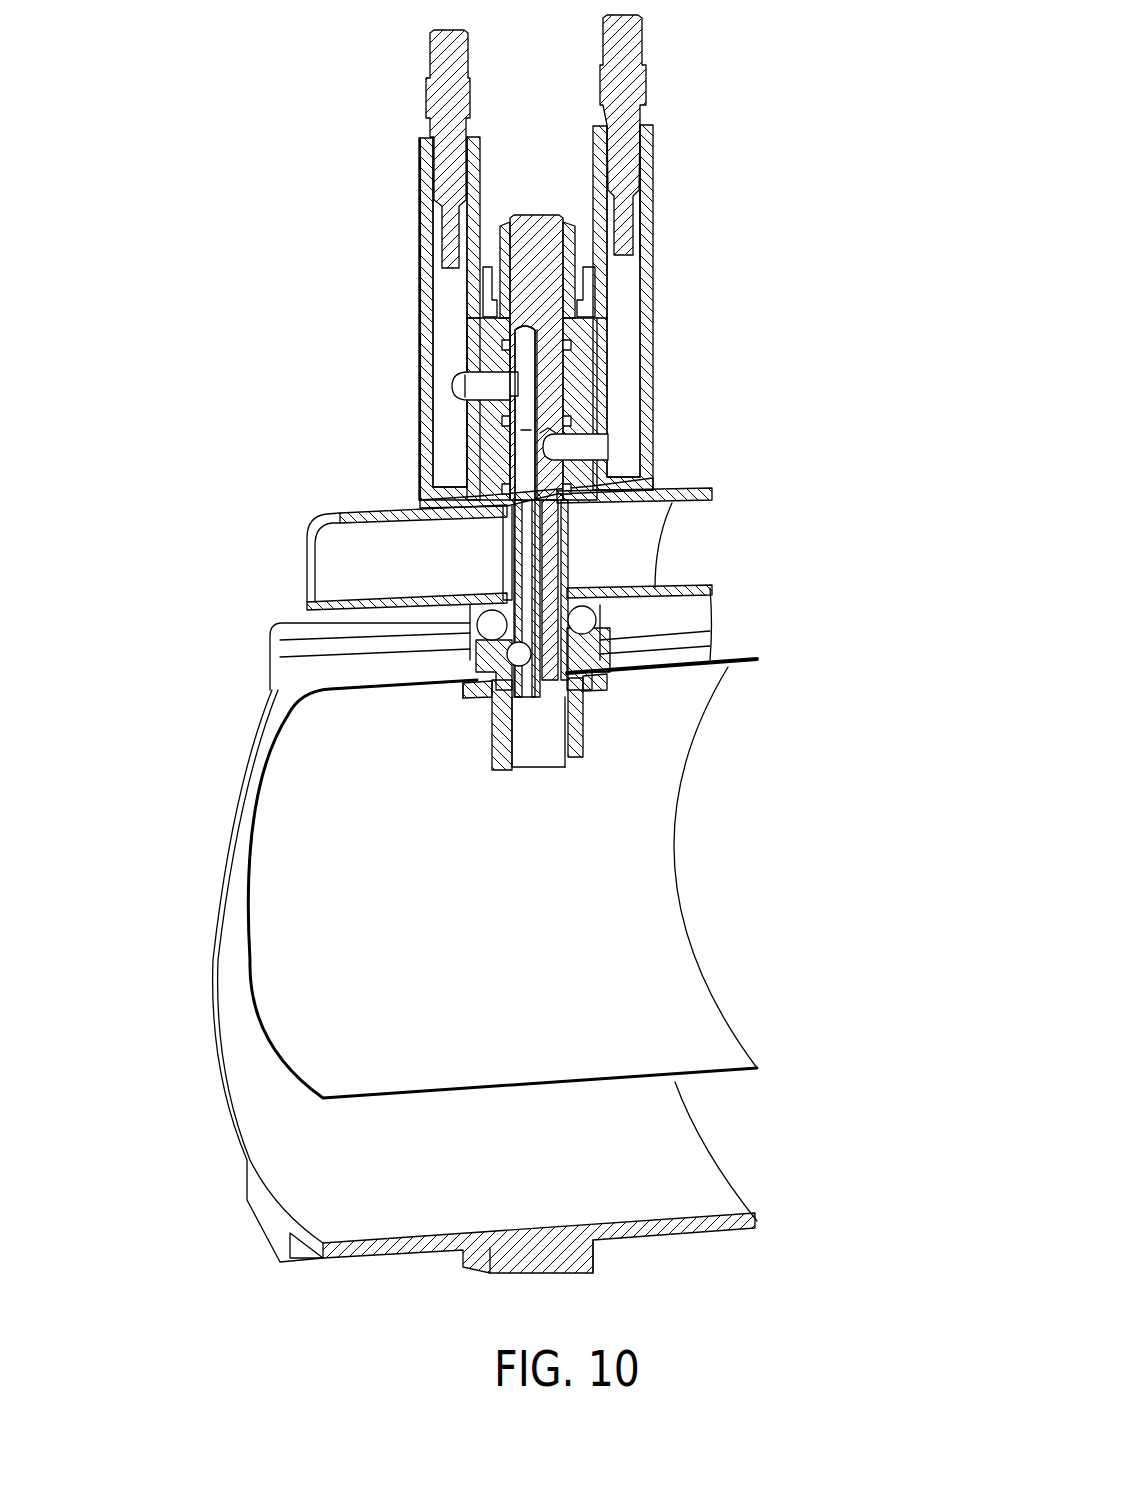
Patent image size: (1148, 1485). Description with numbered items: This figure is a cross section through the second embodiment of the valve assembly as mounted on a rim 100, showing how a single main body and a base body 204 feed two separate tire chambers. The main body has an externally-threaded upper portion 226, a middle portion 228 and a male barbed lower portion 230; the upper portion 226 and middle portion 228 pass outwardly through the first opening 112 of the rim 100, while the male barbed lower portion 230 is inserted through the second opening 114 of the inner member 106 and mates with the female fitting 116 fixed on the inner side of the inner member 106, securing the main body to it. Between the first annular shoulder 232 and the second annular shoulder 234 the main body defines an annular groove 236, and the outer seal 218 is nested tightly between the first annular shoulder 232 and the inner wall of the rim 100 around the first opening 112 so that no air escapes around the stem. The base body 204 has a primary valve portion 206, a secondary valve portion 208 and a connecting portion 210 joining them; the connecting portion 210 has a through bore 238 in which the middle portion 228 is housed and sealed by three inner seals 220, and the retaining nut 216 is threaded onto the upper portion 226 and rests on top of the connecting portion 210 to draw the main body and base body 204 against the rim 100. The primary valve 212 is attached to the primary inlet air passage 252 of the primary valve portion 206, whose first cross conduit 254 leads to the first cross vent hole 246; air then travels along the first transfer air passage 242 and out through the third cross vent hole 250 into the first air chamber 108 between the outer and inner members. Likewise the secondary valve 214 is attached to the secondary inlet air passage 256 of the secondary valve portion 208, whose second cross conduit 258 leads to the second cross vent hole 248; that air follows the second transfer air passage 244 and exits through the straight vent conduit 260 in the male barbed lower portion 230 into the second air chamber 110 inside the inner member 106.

The rim 100 is at (711, 484).
The inner member 106 is at (742, 1074).
The first air chamber 108 is at (298, 1113).
The second air chamber 110 is at (293, 952).
The first opening 112 is at (498, 594).
The second opening 114 is at (600, 650).
The female fitting 116 is at (589, 742).
The base body 204 is at (416, 336).
The primary valve portion 206 is at (496, 342).
The secondary valve portion 208 is at (655, 145).
The connecting portion 210 is at (587, 333).
The primary valve 212 is at (418, 64).
The secondary valve 214 is at (654, 68).
The retaining nut 216 is at (578, 230).
The outer seal 218 is at (325, 633).
The inner seals 220 is at (503, 349).
The externally-threaded upper portion 226 is at (548, 230).
The middle portion 228 is at (543, 393).
The male barbed lower portion 230 is at (545, 772).
The first annular shoulder 232 is at (583, 622).
The second annular shoulder 234 is at (480, 677).
The annular groove 236 is at (475, 646).
The through bore 238 is at (510, 385).
The first transfer air passage 242 is at (527, 447).
The second transfer air passage 244 is at (560, 522).
The first cross vent hole 246 is at (512, 375).
The second cross vent hole 248 is at (540, 470).
The third cross vent hole 250 is at (503, 680).
The primary inlet air passage 252 is at (440, 381).
The first cross conduit 254 is at (480, 392).
The secondary inlet air passage 256 is at (625, 275).
The second cross conduit 258 is at (593, 452).
The straight vent conduit 260 is at (536, 748).